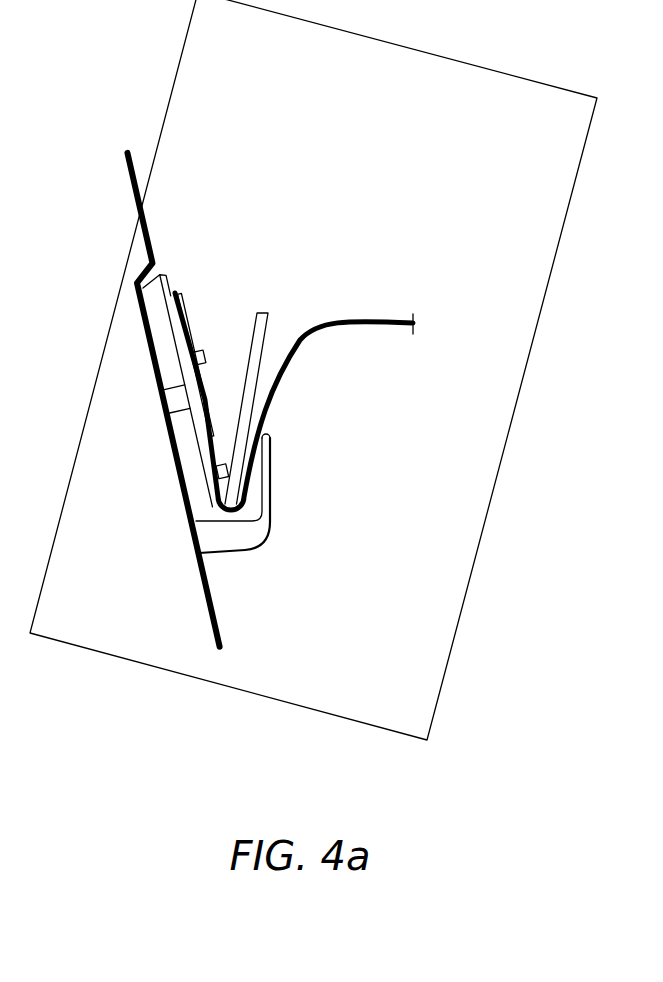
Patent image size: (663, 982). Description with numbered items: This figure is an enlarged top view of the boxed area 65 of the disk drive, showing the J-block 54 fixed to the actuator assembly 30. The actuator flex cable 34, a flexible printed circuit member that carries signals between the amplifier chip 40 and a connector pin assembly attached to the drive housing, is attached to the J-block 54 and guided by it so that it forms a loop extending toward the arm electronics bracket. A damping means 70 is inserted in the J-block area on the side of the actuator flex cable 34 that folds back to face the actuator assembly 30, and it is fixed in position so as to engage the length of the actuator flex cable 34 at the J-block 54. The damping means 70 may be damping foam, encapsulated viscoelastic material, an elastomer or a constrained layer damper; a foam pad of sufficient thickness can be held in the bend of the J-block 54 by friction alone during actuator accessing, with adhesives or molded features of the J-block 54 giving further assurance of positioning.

The actuator assembly 30 is at (129, 182).
The actuator flex cable 34 is at (372, 316).
The amplifier chip 40 is at (184, 301).
The J-block 54 is at (263, 537).
The boxed area 65 is at (182, 47).
The damping means 70 is at (264, 312).